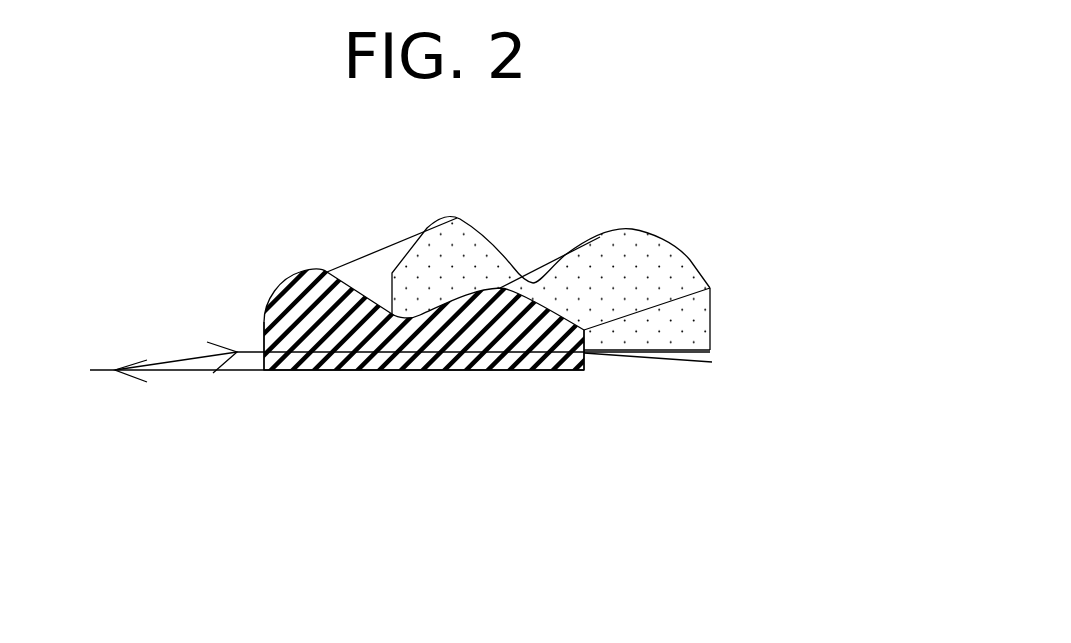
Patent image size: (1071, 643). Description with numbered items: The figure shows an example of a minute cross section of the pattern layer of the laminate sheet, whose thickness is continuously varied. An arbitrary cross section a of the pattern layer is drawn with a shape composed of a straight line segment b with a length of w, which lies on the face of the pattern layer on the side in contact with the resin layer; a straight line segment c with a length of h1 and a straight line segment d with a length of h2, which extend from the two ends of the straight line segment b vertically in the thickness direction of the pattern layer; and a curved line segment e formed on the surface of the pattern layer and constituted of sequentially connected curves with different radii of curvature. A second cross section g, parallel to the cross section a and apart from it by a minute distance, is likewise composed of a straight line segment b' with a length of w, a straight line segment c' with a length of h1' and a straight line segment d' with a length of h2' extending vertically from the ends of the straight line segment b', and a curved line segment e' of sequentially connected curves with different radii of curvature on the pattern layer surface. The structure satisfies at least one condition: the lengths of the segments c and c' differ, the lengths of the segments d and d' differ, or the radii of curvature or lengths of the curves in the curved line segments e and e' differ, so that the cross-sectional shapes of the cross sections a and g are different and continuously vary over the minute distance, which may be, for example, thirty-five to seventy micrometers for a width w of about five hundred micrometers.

The cross section a is at (319, 371).
The straight line segment b is at (473, 425).
The straight line segment c is at (613, 417).
The straight line segment d is at (203, 391).
The curved line segment e is at (423, 290).
The cross section g is at (480, 260).
The straight line segment d' is at (385, 234).
The curved line segment e' is at (628, 223).
The straight line segment c' is at (721, 319).
The straight line segment b' is at (693, 378).